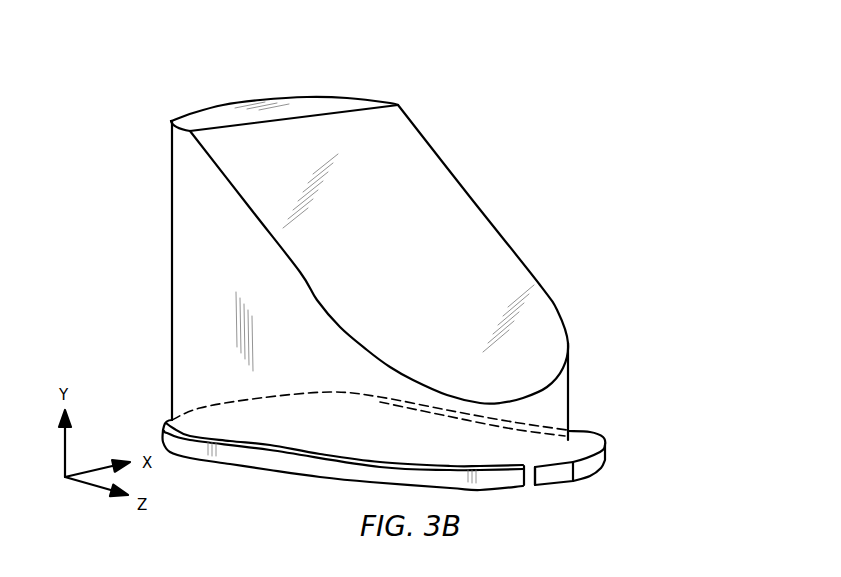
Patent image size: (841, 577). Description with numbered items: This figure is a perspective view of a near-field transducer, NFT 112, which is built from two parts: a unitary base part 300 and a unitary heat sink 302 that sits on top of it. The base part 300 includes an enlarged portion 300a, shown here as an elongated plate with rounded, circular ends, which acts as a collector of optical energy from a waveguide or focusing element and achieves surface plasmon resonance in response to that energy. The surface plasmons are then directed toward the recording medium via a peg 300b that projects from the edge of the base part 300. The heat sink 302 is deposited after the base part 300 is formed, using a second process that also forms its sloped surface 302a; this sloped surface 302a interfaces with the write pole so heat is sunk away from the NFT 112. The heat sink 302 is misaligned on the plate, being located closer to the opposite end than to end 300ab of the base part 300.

The near-field transducer 112 is at (642, 258).
The heat sink 302 is at (490, 218).
The sloped surface 302a is at (422, 165).
The base part 300 is at (297, 500).
The enlarged portion 300a is at (240, 462).
The peg 300b is at (553, 482).
The end of the base part 300ab is at (582, 472).